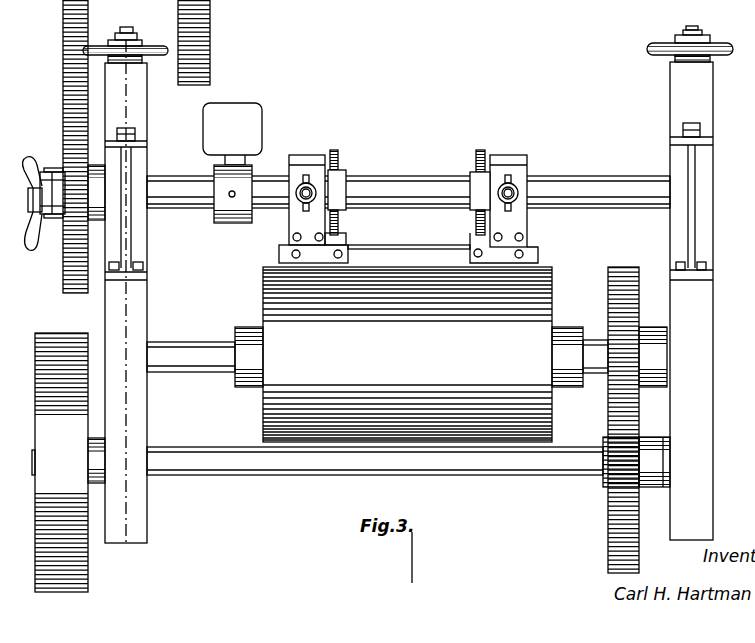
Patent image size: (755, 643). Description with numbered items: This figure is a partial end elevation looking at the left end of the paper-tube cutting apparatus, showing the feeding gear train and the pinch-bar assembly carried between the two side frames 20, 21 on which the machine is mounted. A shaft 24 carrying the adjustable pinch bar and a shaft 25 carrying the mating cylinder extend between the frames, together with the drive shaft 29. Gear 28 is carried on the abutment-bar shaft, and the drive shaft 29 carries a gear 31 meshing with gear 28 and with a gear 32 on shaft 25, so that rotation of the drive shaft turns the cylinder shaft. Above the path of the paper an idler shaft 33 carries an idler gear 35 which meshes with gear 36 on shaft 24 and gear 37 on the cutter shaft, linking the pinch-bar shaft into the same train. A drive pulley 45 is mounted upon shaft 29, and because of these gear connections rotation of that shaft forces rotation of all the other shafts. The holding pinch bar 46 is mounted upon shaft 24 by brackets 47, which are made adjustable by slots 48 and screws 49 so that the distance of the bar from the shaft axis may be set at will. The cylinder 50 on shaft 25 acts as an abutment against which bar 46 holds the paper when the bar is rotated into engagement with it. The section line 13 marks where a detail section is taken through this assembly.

The section line 13 is at (151, 314).
The side frame 20 is at (710, 506).
The side frame 21 is at (135, 523).
The shaft 24 is at (43, 180).
The shaft 25 is at (200, 358).
The gear 28 is at (200, 33).
The drive shaft 29 is at (455, 477).
The gear 31 is at (620, 487).
The gear 32 is at (615, 267).
The idler shaft 33 is at (30, 202).
The idler gear 35 is at (68, 283).
The gear 36 is at (72, 212).
The gear 37 is at (70, 67).
The drive pulley 45 is at (72, 585).
The holding pinch bar 46 is at (400, 251).
The bracket 47 is at (293, 233).
The slot 48 is at (310, 181).
The screw 49 is at (341, 172).
The cylinder 50 is at (270, 298).